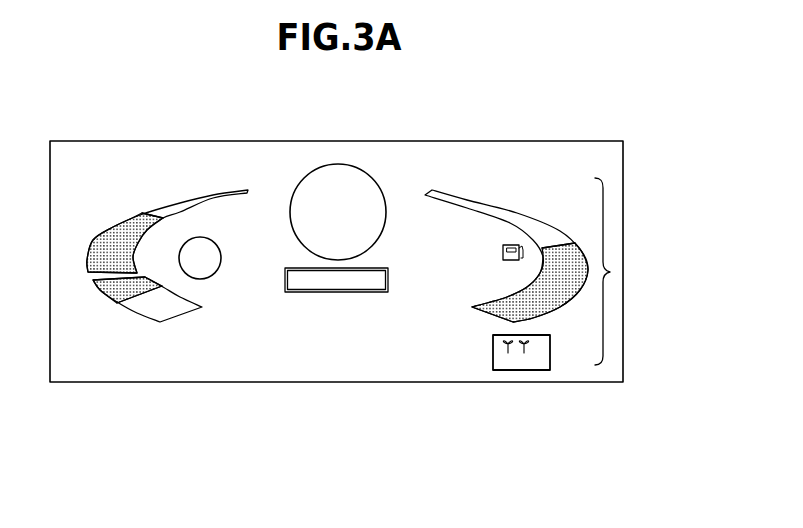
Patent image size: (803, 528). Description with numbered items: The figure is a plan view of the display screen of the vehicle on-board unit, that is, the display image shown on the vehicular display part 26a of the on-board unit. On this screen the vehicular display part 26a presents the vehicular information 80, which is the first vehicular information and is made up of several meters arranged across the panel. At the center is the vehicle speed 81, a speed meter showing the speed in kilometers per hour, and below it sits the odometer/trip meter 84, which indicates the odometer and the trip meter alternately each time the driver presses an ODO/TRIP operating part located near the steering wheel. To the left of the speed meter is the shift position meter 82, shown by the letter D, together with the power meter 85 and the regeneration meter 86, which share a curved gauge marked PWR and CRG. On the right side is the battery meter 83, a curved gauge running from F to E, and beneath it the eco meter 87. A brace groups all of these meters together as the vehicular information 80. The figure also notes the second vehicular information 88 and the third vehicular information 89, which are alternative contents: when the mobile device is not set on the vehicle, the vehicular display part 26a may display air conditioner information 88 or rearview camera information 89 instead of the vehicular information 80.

The vehicular display part 26a is at (580, 141).
The vehicular information 80 is at (610, 272).
The vehicle speed 81 is at (375, 159).
The shift position meter 82 is at (239, 261).
The battery meter 83 is at (505, 188).
The odometer/trip meter 84 is at (335, 313).
The power meter 85 is at (210, 173).
The regeneration meter 86 is at (111, 322).
The eco meter 87 is at (474, 359).
The second vehicular information 88 is at (652, 293).
The third vehicular information 89 is at (652, 293).